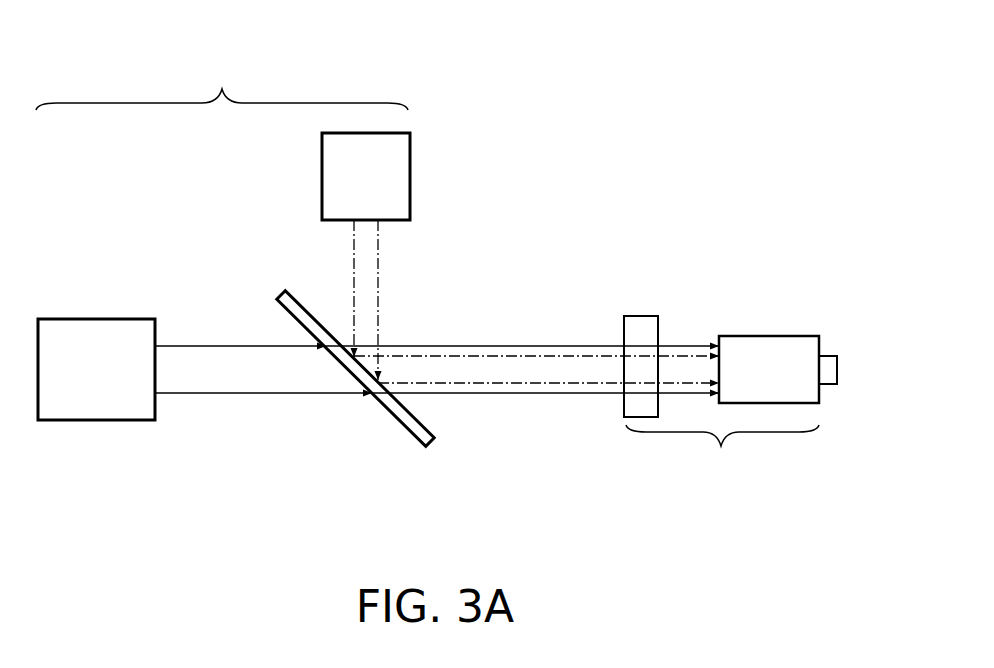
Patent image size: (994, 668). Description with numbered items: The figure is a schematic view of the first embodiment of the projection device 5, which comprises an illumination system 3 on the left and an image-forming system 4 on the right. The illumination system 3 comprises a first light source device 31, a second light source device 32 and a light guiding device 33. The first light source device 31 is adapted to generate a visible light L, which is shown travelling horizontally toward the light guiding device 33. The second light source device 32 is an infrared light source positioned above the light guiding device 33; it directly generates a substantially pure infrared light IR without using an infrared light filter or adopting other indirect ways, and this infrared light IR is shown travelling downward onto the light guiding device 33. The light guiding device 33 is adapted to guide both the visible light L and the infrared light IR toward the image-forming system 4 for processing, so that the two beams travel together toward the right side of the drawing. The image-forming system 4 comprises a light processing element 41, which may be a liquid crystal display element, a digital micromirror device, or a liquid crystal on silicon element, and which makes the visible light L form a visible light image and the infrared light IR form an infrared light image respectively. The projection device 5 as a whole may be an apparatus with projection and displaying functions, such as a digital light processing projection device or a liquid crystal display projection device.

The projection device 5 is at (650, 77).
The illumination system 3 is at (229, 83).
The first light source device 31 is at (95, 375).
The second light source device 32 is at (322, 170).
The light guiding device 33 is at (402, 408).
The image-forming system 4 is at (728, 480).
The light processing element 41 is at (640, 330).
The visible light L is at (268, 398).
The infrared light IR is at (385, 288).